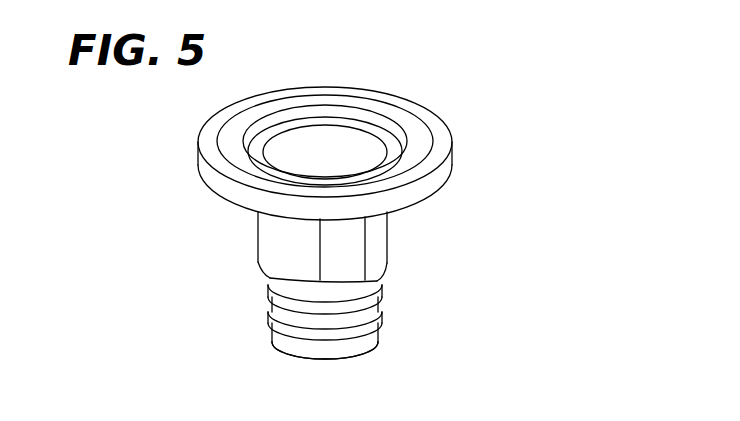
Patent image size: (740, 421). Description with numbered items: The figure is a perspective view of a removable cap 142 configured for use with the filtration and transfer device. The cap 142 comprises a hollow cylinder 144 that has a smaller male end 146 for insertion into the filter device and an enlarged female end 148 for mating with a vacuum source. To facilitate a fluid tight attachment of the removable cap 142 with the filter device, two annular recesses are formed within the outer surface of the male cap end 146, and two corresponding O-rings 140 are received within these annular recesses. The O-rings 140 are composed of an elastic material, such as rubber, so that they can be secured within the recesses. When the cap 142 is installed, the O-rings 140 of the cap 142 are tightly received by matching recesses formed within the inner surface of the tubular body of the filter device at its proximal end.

The O-rings 140 is at (385, 287).
The removable cap 142 is at (488, 97).
The hollow cylinder 144 is at (378, 243).
The male end 146 is at (235, 340).
The female end 148 is at (172, 153).